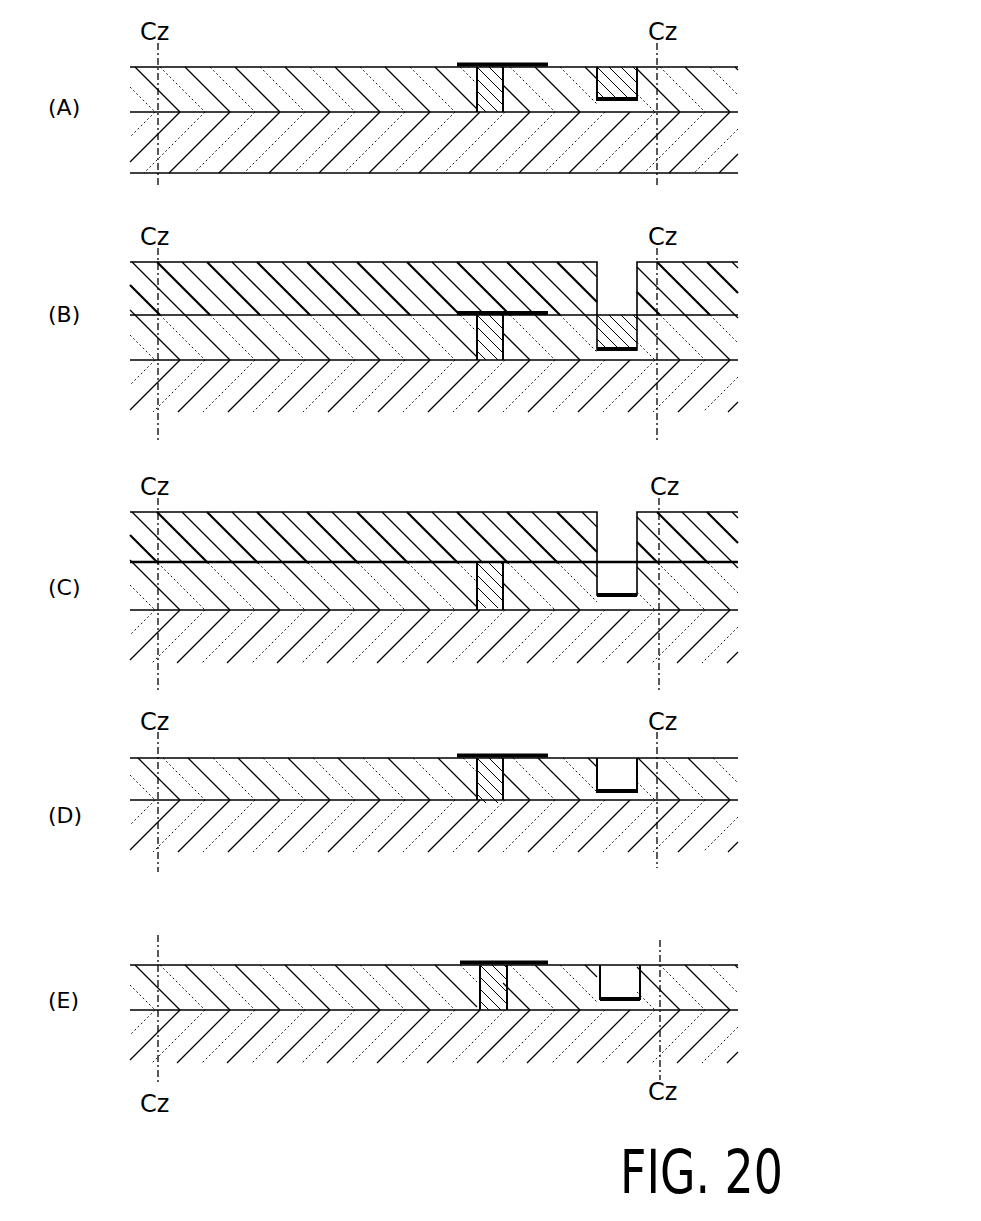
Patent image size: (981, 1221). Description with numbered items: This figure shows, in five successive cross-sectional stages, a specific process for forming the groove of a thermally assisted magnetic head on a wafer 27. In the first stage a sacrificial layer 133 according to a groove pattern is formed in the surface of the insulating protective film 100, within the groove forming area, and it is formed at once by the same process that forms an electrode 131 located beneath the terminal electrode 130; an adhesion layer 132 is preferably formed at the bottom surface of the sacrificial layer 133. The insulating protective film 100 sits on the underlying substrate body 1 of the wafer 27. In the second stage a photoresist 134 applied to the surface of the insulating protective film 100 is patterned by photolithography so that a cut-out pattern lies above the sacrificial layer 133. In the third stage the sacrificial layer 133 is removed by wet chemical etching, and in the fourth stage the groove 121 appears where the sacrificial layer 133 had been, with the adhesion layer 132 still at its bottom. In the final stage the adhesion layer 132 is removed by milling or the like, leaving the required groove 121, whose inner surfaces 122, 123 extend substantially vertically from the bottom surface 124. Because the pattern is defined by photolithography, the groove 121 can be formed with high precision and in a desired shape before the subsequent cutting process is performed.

The semiconductor substrate 1 is at (728, 140).
The wafer 27 is at (736, 61).
The insulating protective film 100 is at (722, 86).
The groove 121 is at (603, 573).
The inner surface 122 is at (612, 963).
The inner surface 123 is at (622, 963).
The bottom surface 124 is at (605, 990).
The terminal electrode 130 is at (484, 62).
The electrode 131 is at (477, 90).
The adhesion layer 132 is at (623, 85).
The sacrificial layer 133 is at (598, 78).
The photoresist 134 is at (222, 262).